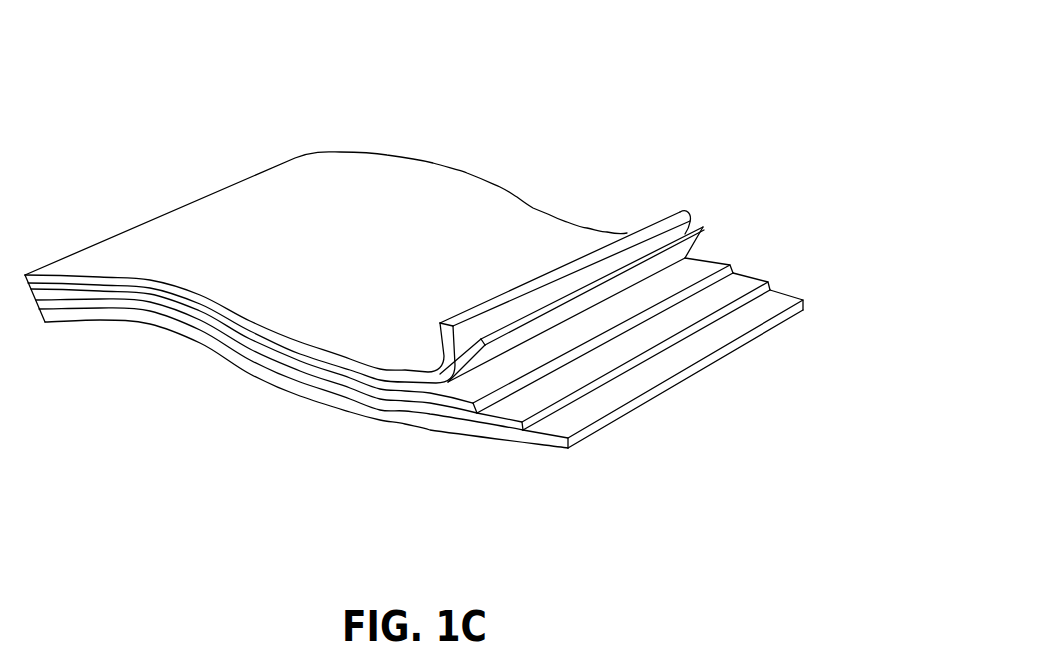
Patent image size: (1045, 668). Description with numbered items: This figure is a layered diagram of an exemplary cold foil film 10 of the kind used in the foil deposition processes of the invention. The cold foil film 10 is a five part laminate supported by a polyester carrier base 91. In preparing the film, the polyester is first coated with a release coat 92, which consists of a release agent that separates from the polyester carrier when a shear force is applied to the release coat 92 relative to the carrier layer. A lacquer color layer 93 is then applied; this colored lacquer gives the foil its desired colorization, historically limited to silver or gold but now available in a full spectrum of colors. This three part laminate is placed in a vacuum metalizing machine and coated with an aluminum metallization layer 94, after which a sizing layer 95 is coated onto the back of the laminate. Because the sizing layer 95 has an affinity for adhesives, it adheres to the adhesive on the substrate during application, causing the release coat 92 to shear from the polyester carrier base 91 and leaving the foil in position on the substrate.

The cold foil film 10 is at (783, 108).
The polyester carrier base 91 is at (183, 231).
The release coat 92 is at (679, 213).
The lacquer color layer 93 is at (708, 264).
The aluminum metallization layer 94 is at (750, 284).
The sizing layer 95 is at (550, 432).